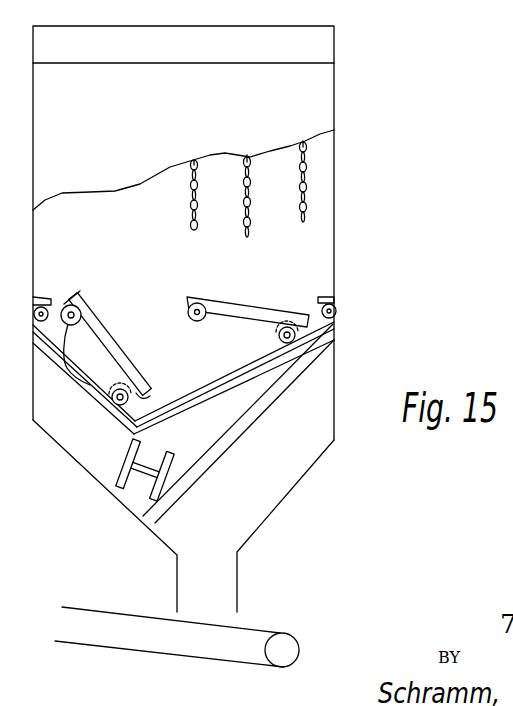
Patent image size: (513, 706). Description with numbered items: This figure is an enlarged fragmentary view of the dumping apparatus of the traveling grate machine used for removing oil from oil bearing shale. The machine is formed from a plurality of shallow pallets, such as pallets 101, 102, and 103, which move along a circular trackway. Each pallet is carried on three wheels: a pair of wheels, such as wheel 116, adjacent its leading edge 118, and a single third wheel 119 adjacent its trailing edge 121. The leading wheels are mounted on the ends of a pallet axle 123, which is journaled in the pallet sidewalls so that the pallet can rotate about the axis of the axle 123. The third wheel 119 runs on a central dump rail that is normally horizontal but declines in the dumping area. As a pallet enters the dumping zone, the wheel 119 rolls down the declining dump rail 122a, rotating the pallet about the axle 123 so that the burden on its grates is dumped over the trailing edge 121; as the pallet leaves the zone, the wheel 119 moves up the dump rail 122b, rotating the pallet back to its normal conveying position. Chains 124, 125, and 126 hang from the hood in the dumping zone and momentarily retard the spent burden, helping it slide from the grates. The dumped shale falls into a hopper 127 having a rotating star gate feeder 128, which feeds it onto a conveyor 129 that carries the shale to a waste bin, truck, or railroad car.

The pallet 101 is at (48, 296).
The pallet 102 is at (238, 302).
The pallet 103 is at (96, 313).
The wheel 116 is at (67, 369).
The leading edge 118 is at (65, 303).
The third wheel 119 is at (130, 400).
The trailing edge 121 is at (148, 386).
The dump rail 122a is at (212, 388).
The dump rail 122b is at (82, 383).
The pallet axle 123 is at (84, 297).
The chain 124 is at (306, 184).
The chain 125 is at (245, 200).
The chain 126 is at (193, 205).
The hopper 127 is at (213, 453).
The rotating star gate feeder 128 is at (121, 462).
The conveyor 129 is at (250, 631).